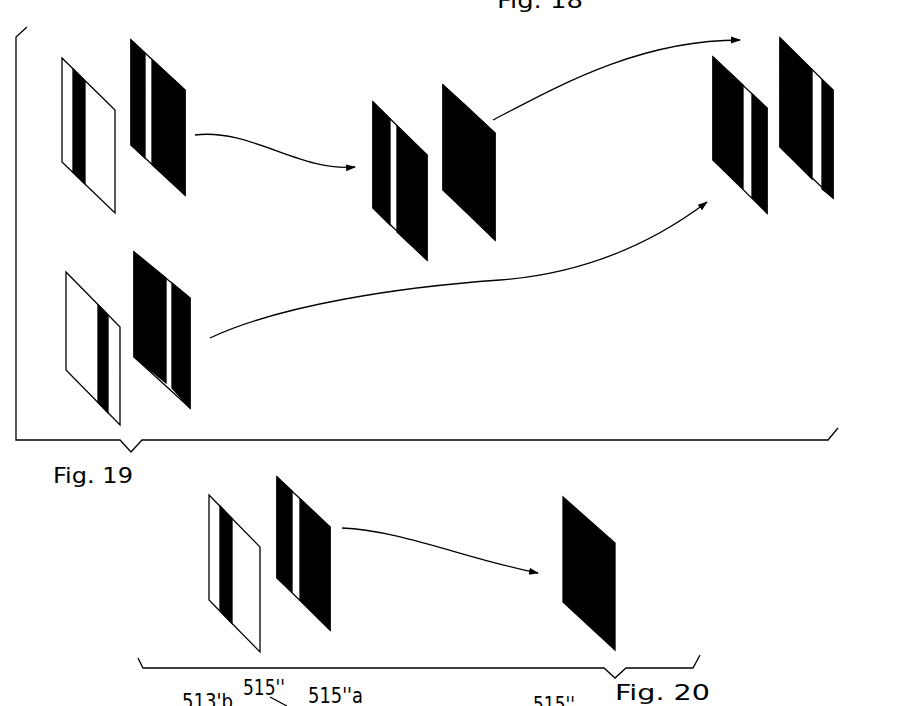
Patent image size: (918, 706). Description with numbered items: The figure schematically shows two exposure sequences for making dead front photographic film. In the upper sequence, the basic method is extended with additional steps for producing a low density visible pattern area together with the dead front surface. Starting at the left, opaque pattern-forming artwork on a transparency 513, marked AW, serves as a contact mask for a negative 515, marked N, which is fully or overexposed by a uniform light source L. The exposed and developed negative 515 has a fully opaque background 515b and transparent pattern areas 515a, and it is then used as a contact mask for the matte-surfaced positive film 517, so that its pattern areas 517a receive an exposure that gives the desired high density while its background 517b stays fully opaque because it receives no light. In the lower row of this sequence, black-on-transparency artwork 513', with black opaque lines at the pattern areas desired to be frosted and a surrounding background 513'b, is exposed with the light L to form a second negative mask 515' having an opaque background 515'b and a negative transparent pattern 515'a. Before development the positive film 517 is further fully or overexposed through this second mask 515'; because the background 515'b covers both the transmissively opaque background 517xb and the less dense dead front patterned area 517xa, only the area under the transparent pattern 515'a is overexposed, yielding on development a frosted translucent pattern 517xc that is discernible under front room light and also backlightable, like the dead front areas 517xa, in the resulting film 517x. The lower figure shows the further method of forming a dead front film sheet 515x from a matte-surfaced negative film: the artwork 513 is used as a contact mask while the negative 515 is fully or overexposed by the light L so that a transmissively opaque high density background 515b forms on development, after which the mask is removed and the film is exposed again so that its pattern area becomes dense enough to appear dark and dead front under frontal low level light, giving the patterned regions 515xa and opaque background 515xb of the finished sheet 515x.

In FIG. 19, the artwork on a transparency 513 is at (84, 117).
In FIG. 20, the artwork on a transparency 513 is at (201, 573).
In FIG. 19, the black-on-transparency artwork 513' is at (92, 333).
In FIG. 19, the background of second artwork 513'b is at (49, 388).
In FIG. 19, the negative film 515 is at (305, 151).
In FIG. 20, the negative film 515 is at (331, 553).
In FIG. 19, the second negative mask 515' is at (450, 232).
In FIG. 19, the negative transparent pattern 515'a is at (132, 355).
In FIG. 19, the background of second negative mask 515'b is at (198, 402).
In FIG. 20, the transparent pattern areas 515a is at (297, 499).
In FIG. 20, the opaque background 515b is at (331, 593).
In FIG. 20, the dead front film sheet 515x is at (612, 539).
In FIG. 20, the light-transmitting portion of modified sheet 515xa is at (581, 510).
In FIG. 20, the opaque portion of modified sheet 515xb is at (571, 502).
In FIG. 19, the positive film 517 is at (444, 84).
In FIG. 19, the pattern areas 517a is at (457, 100).
In FIG. 19, the background 517b is at (497, 178).
In FIG. 19, the modified third sheet 517x is at (788, 45).
In FIG. 19, the dead front patterned area 517xa is at (803, 57).
In FIG. 19, the transmissively opaque background 517xb is at (783, 45).
In FIG. 19, the frosted translucent pattern 517xc is at (818, 74).
In FIG. 19, the negative N is at (156, 60).
In FIG. 20, the negative N is at (303, 604).
In FIG. 19, the light source L is at (36, 168).
In FIG. 20, the light source L is at (155, 584).
In FIG. 19, the artwork on transparency AW is at (96, 196).
In FIG. 20, the artwork on transparency AW is at (216, 613).